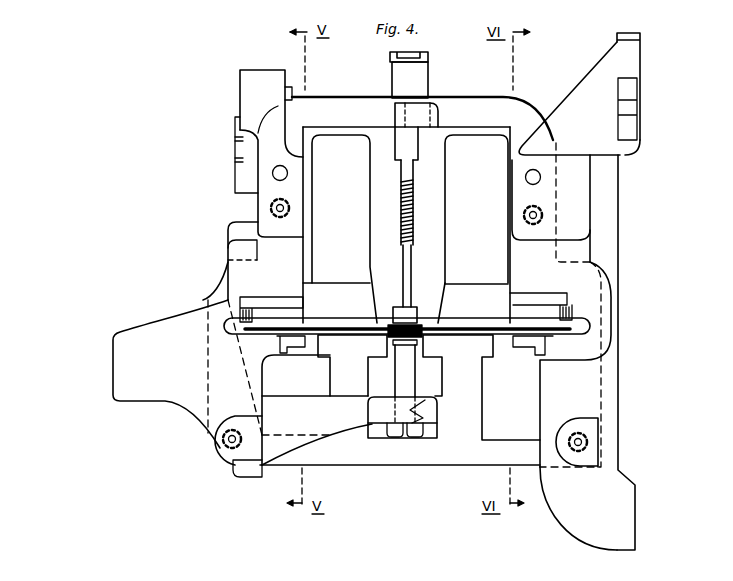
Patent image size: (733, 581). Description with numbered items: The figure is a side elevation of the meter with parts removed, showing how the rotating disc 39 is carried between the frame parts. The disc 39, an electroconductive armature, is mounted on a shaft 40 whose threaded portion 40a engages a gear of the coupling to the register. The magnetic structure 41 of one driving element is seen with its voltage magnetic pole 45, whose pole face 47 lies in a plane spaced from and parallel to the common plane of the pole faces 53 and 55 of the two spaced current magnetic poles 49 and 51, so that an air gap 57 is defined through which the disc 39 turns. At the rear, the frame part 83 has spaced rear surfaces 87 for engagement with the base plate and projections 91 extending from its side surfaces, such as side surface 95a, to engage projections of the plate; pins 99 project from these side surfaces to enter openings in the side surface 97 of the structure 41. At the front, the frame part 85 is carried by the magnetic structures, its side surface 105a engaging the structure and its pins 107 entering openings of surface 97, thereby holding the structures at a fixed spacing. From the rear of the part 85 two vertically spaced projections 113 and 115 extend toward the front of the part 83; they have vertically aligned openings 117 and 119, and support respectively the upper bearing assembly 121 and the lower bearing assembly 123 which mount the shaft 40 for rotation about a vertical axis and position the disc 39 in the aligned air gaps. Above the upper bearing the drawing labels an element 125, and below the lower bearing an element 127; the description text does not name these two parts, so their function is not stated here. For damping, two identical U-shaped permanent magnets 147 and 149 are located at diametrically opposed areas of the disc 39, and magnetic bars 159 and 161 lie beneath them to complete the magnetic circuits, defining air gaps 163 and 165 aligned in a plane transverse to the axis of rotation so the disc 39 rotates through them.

The disc 39 is at (461, 320).
The shaft 40 is at (412, 258).
The threaded portion 40a is at (402, 197).
The magnetic structure 41 is at (508, 100).
The voltage magnetic pole 45 is at (446, 233).
The pole face 47 is at (427, 320).
The current magnetic pole 49 is at (330, 374).
The current magnetic pole 51 is at (482, 384).
The pole face 53 is at (343, 334).
The pole face 55 is at (466, 334).
The air gap 57 is at (357, 323).
The frame part 83 is at (680, 76).
The frame part 85 is at (228, 86).
The rear surface 87 is at (640, 52).
The projection 91 is at (637, 94).
The side surface 95a is at (522, 199).
The side surface 97 is at (512, 149).
The pin 99 is at (525, 178).
The side surface 105a is at (254, 80).
The pin 107 is at (287, 175).
The projection 113 is at (357, 132).
The projection 115 is at (388, 398).
The opening 117 is at (402, 117).
The opening 119 is at (425, 392).
The upper bearing assembly 121 is at (469, 86).
The lower bearing assembly 123 is at (397, 458).
The screw head 125 is at (428, 60).
The plunger 127 is at (414, 435).
The permanent magnet 147 is at (304, 283).
The permanent magnet 149 is at (523, 304).
The magnetic bar 159 is at (407, 335).
The magnetic bar 161 is at (539, 347).
The air gap 163 is at (336, 301).
The air gap 165 is at (500, 323).